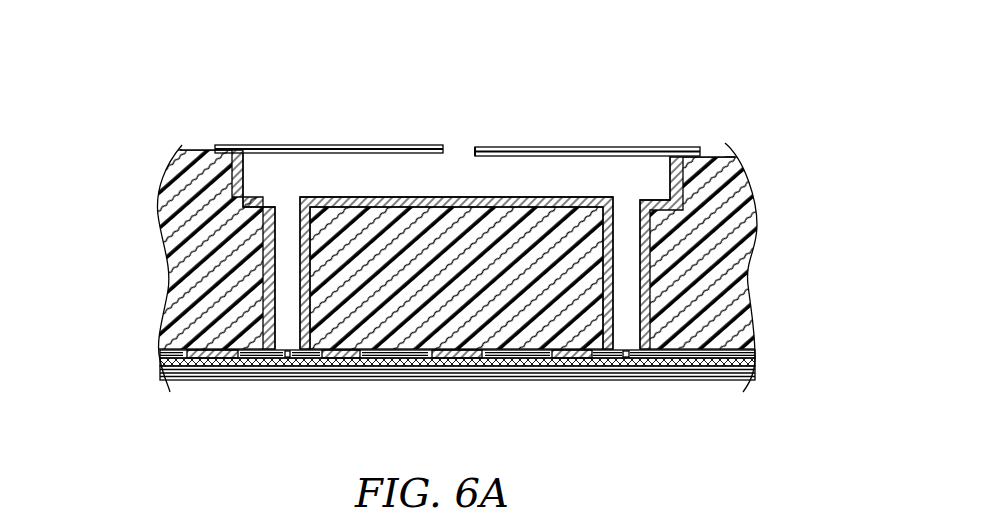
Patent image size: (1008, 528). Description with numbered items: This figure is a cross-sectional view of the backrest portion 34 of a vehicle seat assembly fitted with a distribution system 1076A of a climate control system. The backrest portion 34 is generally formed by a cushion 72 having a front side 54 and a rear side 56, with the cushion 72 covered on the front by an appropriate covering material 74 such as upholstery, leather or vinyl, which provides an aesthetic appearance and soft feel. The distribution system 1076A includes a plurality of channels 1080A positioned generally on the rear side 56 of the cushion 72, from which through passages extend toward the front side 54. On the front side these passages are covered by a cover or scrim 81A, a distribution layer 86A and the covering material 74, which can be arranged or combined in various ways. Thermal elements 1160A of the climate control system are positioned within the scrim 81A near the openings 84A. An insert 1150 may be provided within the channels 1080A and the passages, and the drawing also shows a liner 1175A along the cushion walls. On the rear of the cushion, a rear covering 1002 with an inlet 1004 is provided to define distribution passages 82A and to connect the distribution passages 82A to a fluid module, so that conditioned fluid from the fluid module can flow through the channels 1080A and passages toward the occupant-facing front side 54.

The backrest portion 34 is at (285, 75).
The distribution system 1076A is at (200, 108).
The insert 1150 is at (245, 233).
The sidewall liner 1175A is at (262, 266).
The distribution passages 82A is at (386, 186).
The channels 1080A is at (537, 210).
The cushion 72 is at (694, 278).
The rear side 56 is at (708, 157).
The rear covering 1002 is at (566, 146).
The inlet 1004 is at (476, 147).
The front side 54 is at (160, 351).
The covering material 74 is at (713, 370).
The thermal elements 1160A is at (560, 367).
The openings 84A is at (285, 358).
The distribution layer 86A is at (395, 367).
The scrim 81A is at (505, 367).